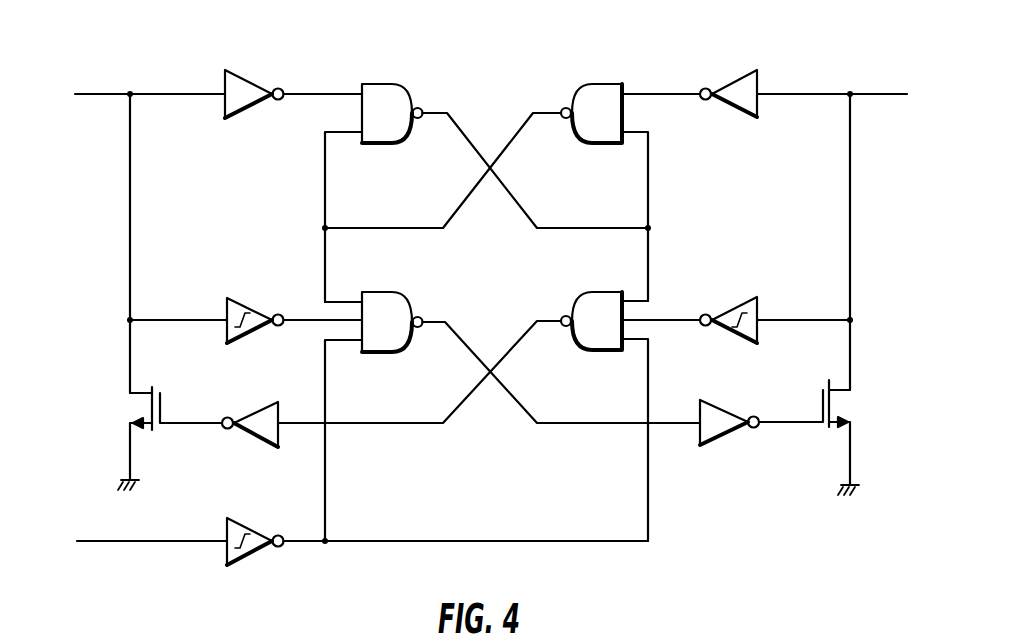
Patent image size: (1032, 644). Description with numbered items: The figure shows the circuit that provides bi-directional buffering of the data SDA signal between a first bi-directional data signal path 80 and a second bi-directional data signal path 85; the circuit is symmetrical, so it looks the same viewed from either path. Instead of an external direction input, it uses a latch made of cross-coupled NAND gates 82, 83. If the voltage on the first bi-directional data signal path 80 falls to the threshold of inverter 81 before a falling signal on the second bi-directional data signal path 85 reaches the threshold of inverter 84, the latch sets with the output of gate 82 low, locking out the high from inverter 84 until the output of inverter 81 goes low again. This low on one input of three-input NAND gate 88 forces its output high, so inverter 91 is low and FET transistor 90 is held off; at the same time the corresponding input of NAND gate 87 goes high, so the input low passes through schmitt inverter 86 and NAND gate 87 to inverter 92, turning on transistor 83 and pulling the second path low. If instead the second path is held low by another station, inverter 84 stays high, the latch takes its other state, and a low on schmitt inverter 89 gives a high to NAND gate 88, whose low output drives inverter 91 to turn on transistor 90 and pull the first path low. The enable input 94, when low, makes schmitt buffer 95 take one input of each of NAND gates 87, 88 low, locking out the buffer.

The first bi-directional data signal path 80 is at (118, 93).
The inverter 81 is at (250, 70).
The NAND gate 82 is at (373, 83).
The NAND gate 83 is at (603, 83).
The inverter 84 is at (730, 70).
The second bi-directional data signal path 85 is at (895, 92).
The schmitt inverter 86 is at (237, 298).
The NAND gate 87 is at (372, 292).
The NAND gate 88 is at (603, 292).
The schmitt inverter 89 is at (748, 298).
The FET transistor 90 is at (125, 412).
The inverter 91 is at (248, 402).
The inverter 92 is at (712, 400).
The enable input 94 is at (93, 540).
The schmitt buffer 95 is at (235, 518).